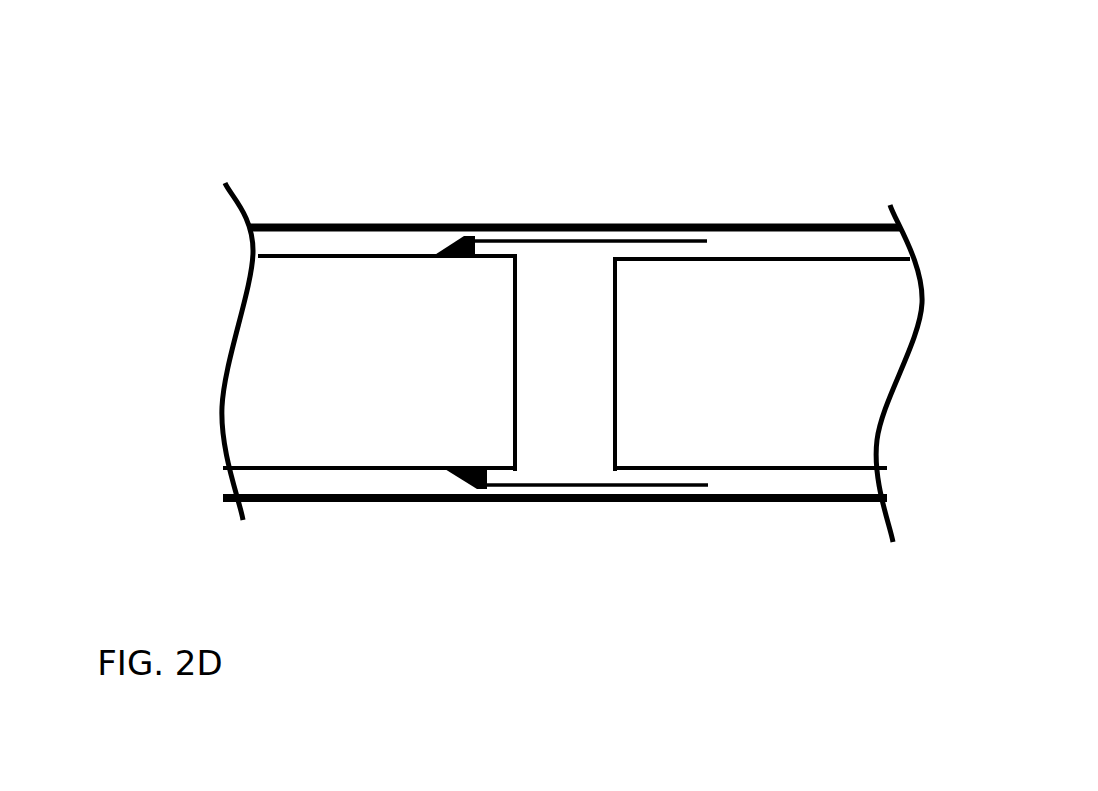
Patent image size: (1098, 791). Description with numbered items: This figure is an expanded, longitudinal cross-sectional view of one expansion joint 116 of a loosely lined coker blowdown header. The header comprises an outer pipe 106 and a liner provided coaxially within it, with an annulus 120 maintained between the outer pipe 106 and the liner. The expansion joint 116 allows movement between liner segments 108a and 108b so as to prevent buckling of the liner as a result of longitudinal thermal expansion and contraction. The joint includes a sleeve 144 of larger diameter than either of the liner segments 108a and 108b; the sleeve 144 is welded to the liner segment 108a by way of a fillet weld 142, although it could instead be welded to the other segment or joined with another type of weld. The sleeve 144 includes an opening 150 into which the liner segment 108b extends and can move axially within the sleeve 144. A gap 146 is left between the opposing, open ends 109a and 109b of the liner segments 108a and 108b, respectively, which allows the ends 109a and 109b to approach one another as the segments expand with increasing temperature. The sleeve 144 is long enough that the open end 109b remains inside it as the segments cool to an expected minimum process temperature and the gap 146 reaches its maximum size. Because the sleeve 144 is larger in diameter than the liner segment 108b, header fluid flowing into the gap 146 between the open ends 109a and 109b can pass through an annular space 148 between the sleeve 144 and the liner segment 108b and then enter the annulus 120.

The outer pipe 106 is at (345, 225).
The annulus 120 is at (395, 242).
The expansion joint 116 is at (662, 181).
The opening 150 is at (698, 242).
The annular space 148 is at (682, 249).
The liner segment 108a is at (390, 471).
The liner segment 108b is at (773, 462).
The open end 109a is at (513, 422).
The open end 109b is at (616, 412).
The gap 146 is at (520, 363).
The fillet weld 142 is at (473, 487).
The sleeve 144 is at (580, 487).